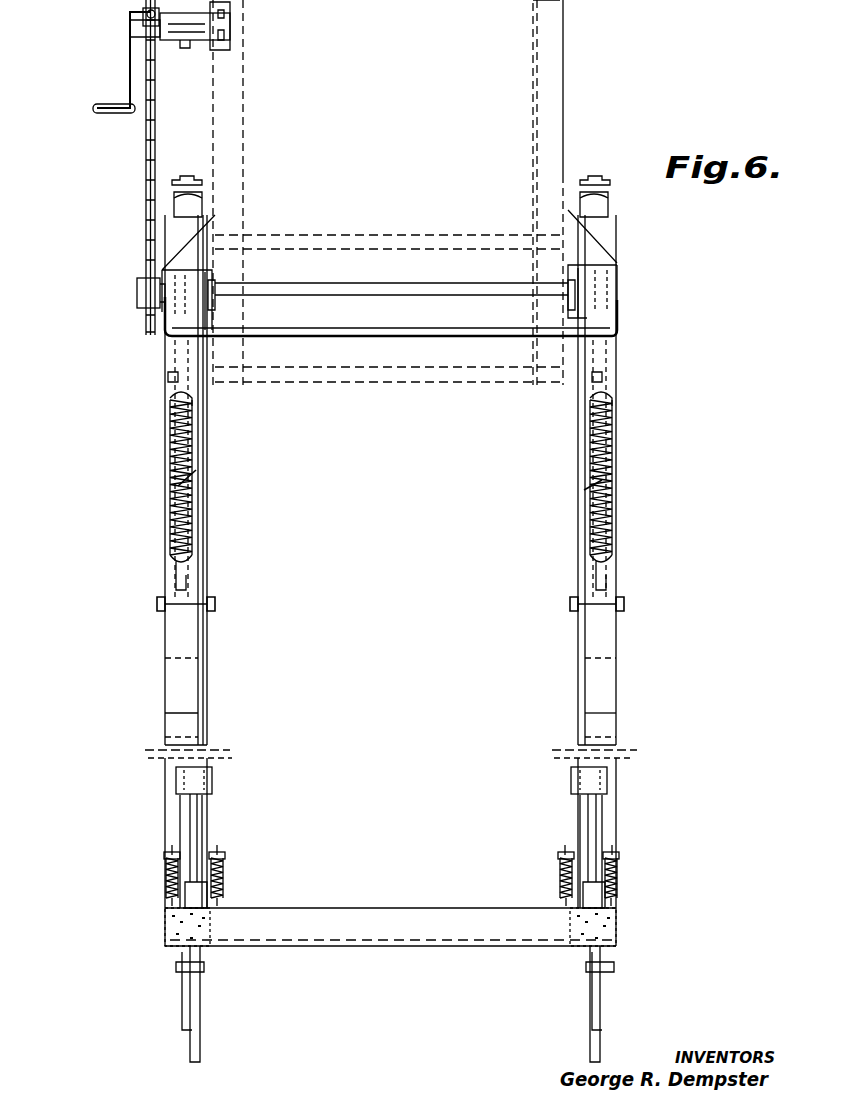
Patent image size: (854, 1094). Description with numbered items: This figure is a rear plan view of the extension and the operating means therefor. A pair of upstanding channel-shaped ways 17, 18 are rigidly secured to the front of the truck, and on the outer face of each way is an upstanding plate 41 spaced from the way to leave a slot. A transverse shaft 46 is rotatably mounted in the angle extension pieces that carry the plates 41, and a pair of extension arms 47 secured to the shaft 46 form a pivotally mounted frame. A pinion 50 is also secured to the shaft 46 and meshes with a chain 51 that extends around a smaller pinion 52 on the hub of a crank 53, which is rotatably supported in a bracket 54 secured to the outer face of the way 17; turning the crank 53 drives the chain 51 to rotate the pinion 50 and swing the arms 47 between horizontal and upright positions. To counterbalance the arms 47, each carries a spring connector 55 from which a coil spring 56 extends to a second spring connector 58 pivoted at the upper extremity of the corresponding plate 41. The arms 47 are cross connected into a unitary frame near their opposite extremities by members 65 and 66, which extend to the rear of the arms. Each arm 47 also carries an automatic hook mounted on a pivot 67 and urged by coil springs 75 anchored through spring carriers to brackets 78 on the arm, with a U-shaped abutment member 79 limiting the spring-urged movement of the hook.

The upstanding way 17 is at (240, 177).
The upstanding way 18 is at (545, 137).
The upstanding plate 41 is at (170, 350).
The transverse shaft 46 is at (395, 292).
The extension arm 47 is at (192, 632).
The pinion 50 is at (148, 322).
The chain 51 is at (150, 208).
The smaller pinion 52 is at (145, 12).
The crank 53 is at (108, 114).
The bracket 54 is at (230, 10).
The spring connector 55 is at (172, 572).
The coil spring 56 is at (168, 432).
The second spring connector 58 is at (168, 394).
The cross connecting member 65 is at (390, 907).
The cross connecting member 66 is at (426, 337).
The pivot 67 is at (214, 856).
The coil spring 75 is at (165, 878).
The bracket 78 is at (166, 931).
The abutment member 79 is at (198, 783).